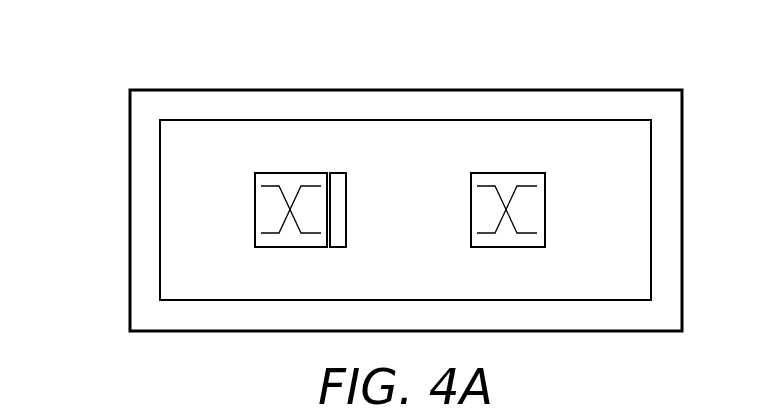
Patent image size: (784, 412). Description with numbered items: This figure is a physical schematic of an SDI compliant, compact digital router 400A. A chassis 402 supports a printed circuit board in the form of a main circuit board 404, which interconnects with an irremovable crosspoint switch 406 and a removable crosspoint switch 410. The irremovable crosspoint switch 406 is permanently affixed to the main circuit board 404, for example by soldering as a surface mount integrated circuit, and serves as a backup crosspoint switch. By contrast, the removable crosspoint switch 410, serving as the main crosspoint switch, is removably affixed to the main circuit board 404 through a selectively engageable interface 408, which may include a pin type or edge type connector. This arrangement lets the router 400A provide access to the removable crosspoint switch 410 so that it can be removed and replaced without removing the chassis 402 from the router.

The compact digital router 400A is at (197, 61).
The chassis 402 is at (130, 146).
The main circuit board 404 is at (170, 188).
The irremovable crosspoint switch 406 is at (500, 173).
The selectively engageable interface 408 is at (338, 173).
The removable crosspoint switch 410 is at (283, 173).